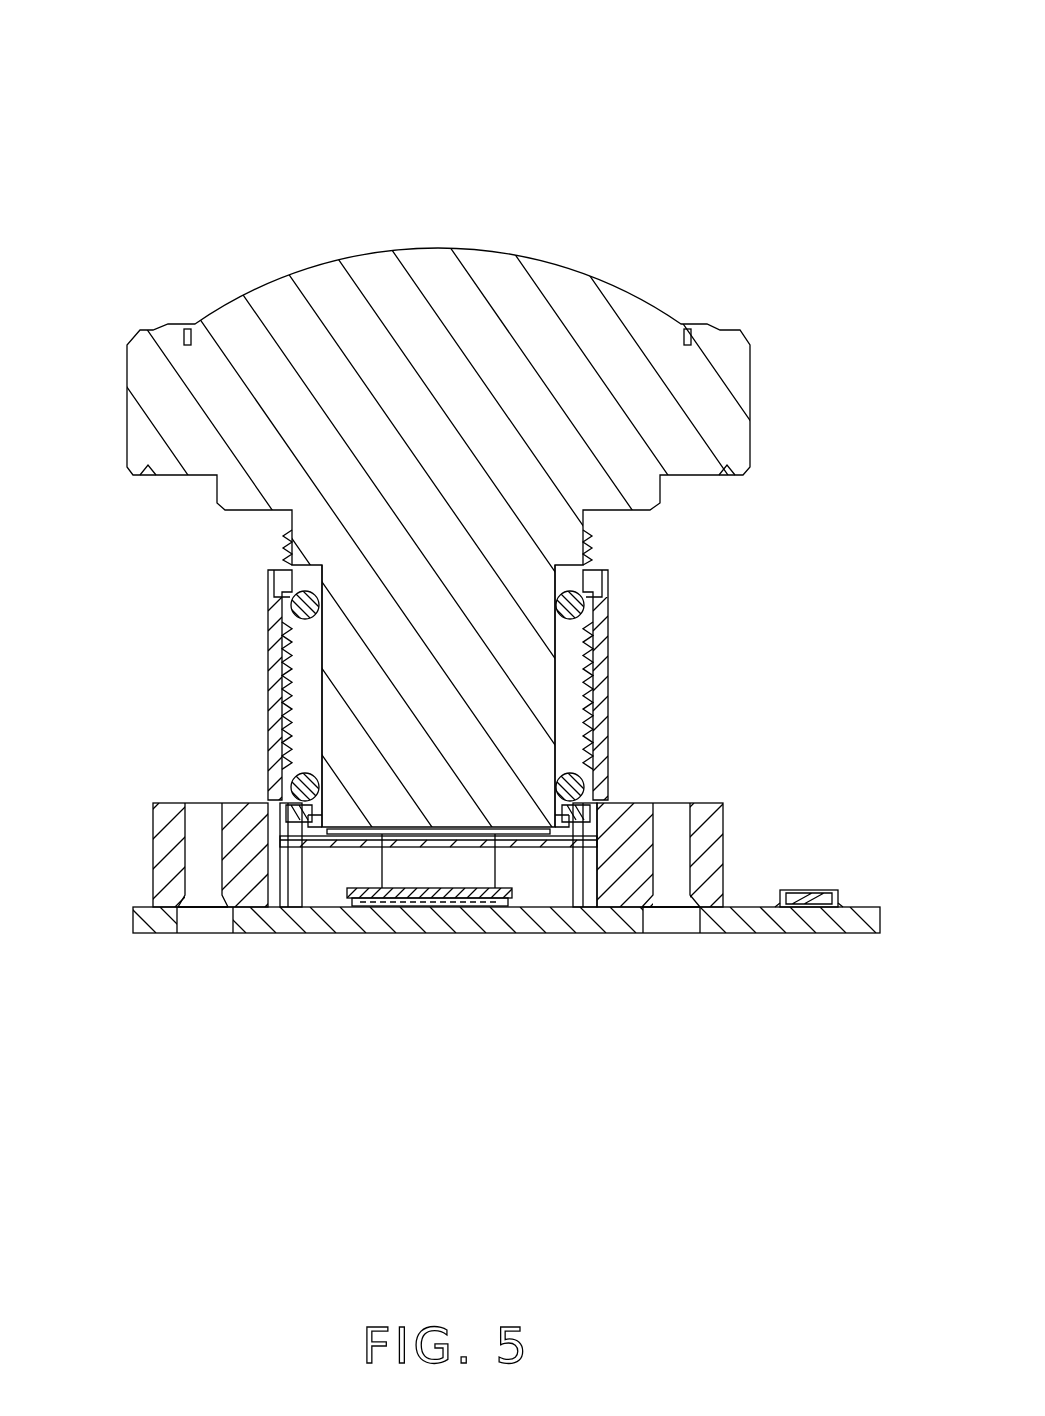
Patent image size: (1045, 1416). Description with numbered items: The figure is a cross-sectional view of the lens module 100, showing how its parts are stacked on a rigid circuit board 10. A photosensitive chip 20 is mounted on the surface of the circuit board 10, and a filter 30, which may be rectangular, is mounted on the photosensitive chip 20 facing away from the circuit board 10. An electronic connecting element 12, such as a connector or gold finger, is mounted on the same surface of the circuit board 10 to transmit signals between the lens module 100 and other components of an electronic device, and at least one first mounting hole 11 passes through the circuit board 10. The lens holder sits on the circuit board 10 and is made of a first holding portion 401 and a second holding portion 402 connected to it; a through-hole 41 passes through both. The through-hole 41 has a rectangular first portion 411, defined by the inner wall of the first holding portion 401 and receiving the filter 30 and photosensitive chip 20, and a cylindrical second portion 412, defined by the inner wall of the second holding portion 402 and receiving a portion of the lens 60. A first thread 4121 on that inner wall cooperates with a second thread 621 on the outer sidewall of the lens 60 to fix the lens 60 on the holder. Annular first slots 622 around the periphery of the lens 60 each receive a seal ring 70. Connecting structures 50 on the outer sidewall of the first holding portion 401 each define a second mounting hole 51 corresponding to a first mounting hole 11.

The lens module 100 is at (165, 42).
The lens 60 is at (410, 632).
The seal ring 70 is at (298, 603).
The through-hole 41 is at (718, 703).
The second portion 412 is at (452, 684).
The first thread 4121 is at (288, 690).
The first portion 411 is at (545, 865).
The second holding portion 402 is at (318, 668).
The second thread 621 is at (600, 636).
The first slot 622 is at (592, 590).
The connecting structure 50 is at (212, 828).
The second mounting hole 51 is at (202, 830).
The first holding portion 401 is at (723, 845).
The electronic connecting element 12 is at (812, 890).
The first mounting hole 11 is at (203, 912).
The circuit board 10 is at (489, 958).
The photosensitive chip 20 is at (420, 908).
The filter 30 is at (352, 905).